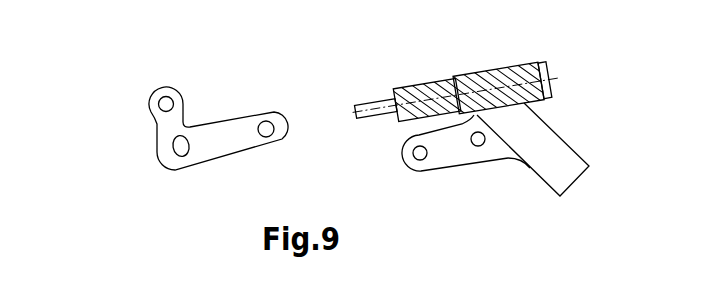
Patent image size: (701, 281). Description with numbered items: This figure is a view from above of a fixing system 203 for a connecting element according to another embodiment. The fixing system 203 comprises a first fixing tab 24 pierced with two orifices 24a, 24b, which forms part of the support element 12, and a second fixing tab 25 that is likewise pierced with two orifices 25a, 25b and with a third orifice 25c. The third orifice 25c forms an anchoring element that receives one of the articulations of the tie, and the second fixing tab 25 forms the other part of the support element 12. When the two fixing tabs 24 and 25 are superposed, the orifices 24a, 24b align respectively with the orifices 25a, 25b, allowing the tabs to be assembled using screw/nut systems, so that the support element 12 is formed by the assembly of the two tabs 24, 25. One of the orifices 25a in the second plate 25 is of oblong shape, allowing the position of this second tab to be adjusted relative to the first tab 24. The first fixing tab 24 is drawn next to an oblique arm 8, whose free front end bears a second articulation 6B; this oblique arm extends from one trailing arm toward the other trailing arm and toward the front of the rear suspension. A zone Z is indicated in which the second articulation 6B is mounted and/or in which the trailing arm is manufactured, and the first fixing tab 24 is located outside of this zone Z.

The fixing system 203 is at (112, 118).
The second fixing tab 25 is at (218, 150).
The orifice 25a is at (173, 145).
The orifice 25b is at (267, 121).
The third orifice 25c is at (166, 97).
The support element 12 is at (443, 186).
The first fixing tab 24 is at (458, 158).
The orifice 24a is at (413, 153).
The orifice 24b is at (481, 132).
The oblique arm 8 is at (543, 139).
The second articulation 6B is at (520, 64).
The zone Z is at (430, 82).